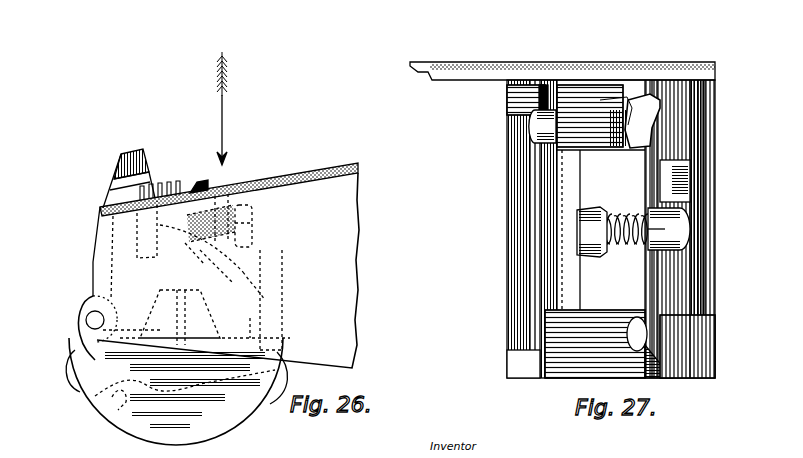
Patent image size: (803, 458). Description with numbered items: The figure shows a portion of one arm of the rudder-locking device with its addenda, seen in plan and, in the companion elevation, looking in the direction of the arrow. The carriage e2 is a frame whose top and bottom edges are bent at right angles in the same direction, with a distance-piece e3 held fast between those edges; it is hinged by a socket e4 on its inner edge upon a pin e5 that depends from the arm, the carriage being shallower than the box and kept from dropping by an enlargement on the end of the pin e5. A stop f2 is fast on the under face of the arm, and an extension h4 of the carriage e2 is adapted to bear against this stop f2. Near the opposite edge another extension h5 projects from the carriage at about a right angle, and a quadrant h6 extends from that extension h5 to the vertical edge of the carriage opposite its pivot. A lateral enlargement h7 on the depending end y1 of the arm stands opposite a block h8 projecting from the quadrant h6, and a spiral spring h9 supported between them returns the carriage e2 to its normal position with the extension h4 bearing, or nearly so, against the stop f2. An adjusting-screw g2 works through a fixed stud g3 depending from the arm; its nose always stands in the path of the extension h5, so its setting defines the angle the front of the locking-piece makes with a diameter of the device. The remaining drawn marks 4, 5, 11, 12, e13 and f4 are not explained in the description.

In FIG. 26, the stop f2 is at (277, 297).
In FIG. 27, the stop f2 is at (540, 100).
In FIG. 26, the depending end of the arm y1 is at (92, 261).
In FIG. 27, the depending end of the arm y1 is at (697, 177).
In FIG. 26, the pivot pin 4 is at (93, 293).
In FIG. 26, the pivot 5 is at (88, 320).
In FIG. 26, the carriage e2 is at (207, 424).
In FIG. 27, the carriage e2 is at (573, 363).
In FIG. 26, the lobe 11 is at (82, 388).
In FIG. 26, the lobe 12 is at (270, 400).
In FIG. 26, the distance-piece e3 is at (126, 406).
In FIG. 26, the lateral enlargement h7 is at (116, 169).
In FIG. 27, the lateral enlargement h7 is at (665, 228).
In FIG. 26, the spiral spring h9 is at (168, 186).
In FIG. 27, the spiral spring h9 is at (628, 216).
In FIG. 26, the block h8 is at (198, 184).
In FIG. 27, the block h8 is at (592, 232).
In FIG. 26, the extension h5 is at (137, 242).
In FIG. 27, the extension h5 is at (648, 125).
In FIG. 26, the fixed stud g3 is at (232, 202).
In FIG. 27, the fixed stud g3 is at (601, 117).
In FIG. 26, the adjusting-screw g2 is at (250, 206).
In FIG. 27, the adjusting-screw g2 is at (545, 130).
In FIG. 26, the quadrant h6 is at (240, 258).
In FIG. 27, the quadrant h6 is at (571, 230).
In FIG. 26, the slot e13 is at (186, 290).
In FIG. 26, the extension of the carriage h4 is at (282, 320).
In FIG. 27, the pin f4 is at (543, 84).
In FIG. 27, the socket e4 is at (715, 278).
In FIG. 27, the pin e5 is at (707, 336).